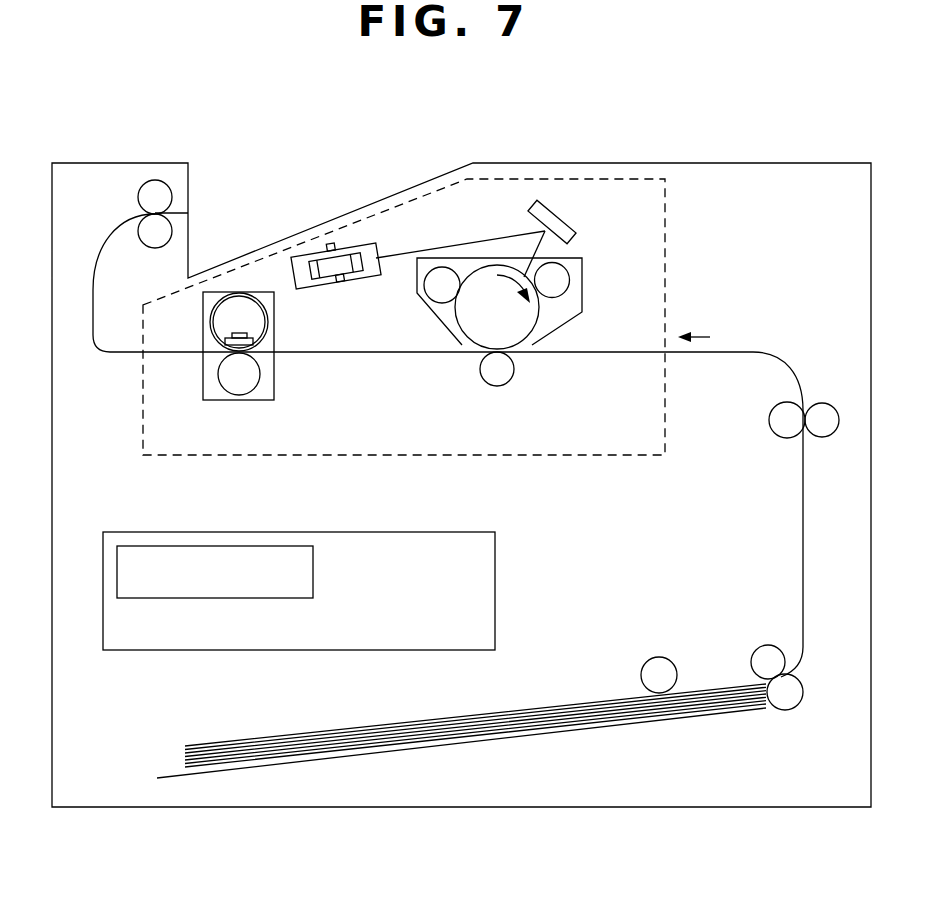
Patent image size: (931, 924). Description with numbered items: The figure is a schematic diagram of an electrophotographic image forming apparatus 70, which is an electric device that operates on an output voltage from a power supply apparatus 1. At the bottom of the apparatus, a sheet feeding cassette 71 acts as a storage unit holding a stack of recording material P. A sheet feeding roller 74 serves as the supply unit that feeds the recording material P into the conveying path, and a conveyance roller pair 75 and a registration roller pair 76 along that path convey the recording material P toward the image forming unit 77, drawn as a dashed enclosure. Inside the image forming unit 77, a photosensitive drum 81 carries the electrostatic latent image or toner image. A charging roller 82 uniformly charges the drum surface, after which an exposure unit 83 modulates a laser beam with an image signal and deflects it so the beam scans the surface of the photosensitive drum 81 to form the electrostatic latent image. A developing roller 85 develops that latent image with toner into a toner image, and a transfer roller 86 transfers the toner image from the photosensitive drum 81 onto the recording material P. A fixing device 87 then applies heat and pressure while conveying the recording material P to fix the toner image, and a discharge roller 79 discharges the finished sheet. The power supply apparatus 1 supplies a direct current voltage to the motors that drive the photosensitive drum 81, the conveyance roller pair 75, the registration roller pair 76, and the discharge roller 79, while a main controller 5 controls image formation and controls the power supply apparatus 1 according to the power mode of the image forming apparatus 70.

The image forming apparatus 70 is at (580, 163).
The image forming unit 77 is at (666, 200).
The discharge roller 79 is at (150, 195).
The fixing device 87 is at (274, 390).
The exposure unit 83 is at (377, 246).
The photosensitive drum 81 is at (531, 323).
The charging roller 82 is at (433, 288).
The developing roller 85 is at (553, 285).
The transfer roller 86 is at (497, 368).
The registration roller pair 76 is at (782, 422).
The power supply apparatus 1 is at (167, 532).
The main controller 5 is at (287, 546).
The sheet feeding roller 74 is at (659, 670).
The conveyance roller pair 75 is at (769, 660).
The recording material P is at (390, 727).
The sheet feeding cassette 71 is at (157, 778).